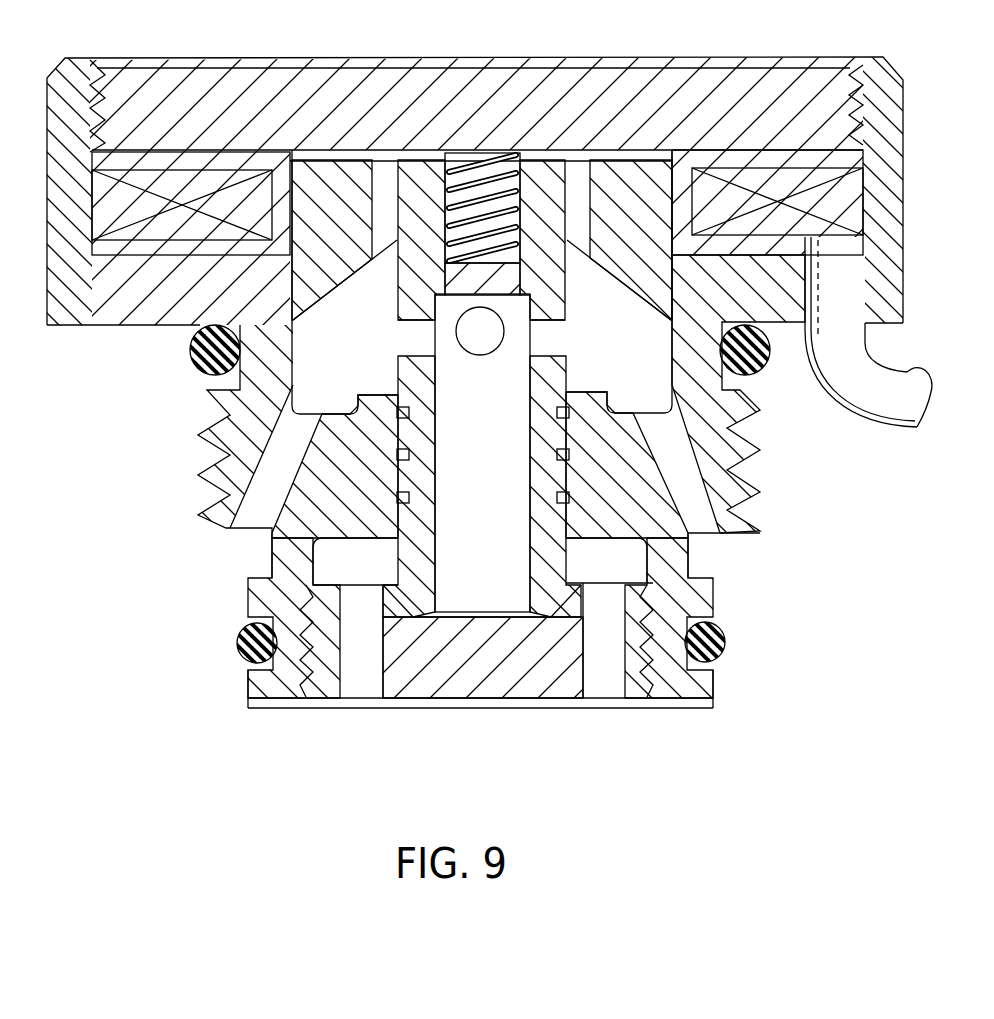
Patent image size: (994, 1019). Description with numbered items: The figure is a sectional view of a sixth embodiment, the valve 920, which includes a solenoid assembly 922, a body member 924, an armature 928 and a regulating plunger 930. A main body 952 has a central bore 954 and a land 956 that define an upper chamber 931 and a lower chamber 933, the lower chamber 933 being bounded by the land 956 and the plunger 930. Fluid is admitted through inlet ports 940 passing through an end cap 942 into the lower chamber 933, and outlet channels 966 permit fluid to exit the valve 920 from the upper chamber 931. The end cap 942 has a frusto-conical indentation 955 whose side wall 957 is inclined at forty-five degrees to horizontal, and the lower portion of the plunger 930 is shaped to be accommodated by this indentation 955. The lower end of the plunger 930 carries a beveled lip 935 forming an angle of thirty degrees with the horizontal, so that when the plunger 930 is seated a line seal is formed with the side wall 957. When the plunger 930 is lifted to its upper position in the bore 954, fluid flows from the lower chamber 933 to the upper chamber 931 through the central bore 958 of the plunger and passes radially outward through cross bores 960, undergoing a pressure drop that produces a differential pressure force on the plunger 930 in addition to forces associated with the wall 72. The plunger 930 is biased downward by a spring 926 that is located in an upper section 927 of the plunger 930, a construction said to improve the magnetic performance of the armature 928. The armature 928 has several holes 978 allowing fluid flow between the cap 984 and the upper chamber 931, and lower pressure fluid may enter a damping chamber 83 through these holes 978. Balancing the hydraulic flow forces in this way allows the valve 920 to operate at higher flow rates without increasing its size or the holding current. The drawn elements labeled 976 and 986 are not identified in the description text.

The wall 72 is at (427, 337).
The damping chamber 83 is at (640, 152).
The valve 920 is at (196, 454).
The solenoid assembly 922 is at (124, 260).
The body member 924 is at (242, 607).
The spring 926 is at (460, 162).
The upper section 927 is at (522, 217).
The armature 928 is at (323, 162).
The regulating plunger 930 is at (430, 498).
The upper chamber 931 is at (352, 360).
The lower chamber 933 is at (368, 577).
The beveled lip 935 is at (417, 600).
The inlet ports 940 is at (357, 677).
The end cap 942 is at (483, 687).
The main body 952 is at (727, 372).
The central bore 954 is at (400, 438).
The frusto-conical indentation 955 is at (498, 620).
The land 956 is at (590, 388).
The side wall 957 is at (542, 617).
The central bore 958 is at (530, 563).
The cross bores 960 is at (407, 352).
The outlet channels 966 is at (723, 513).
The sleeve 976 is at (413, 480).
The holes 978 is at (392, 162).
The cap 984 is at (615, 87).
The conduit 986 is at (798, 186).